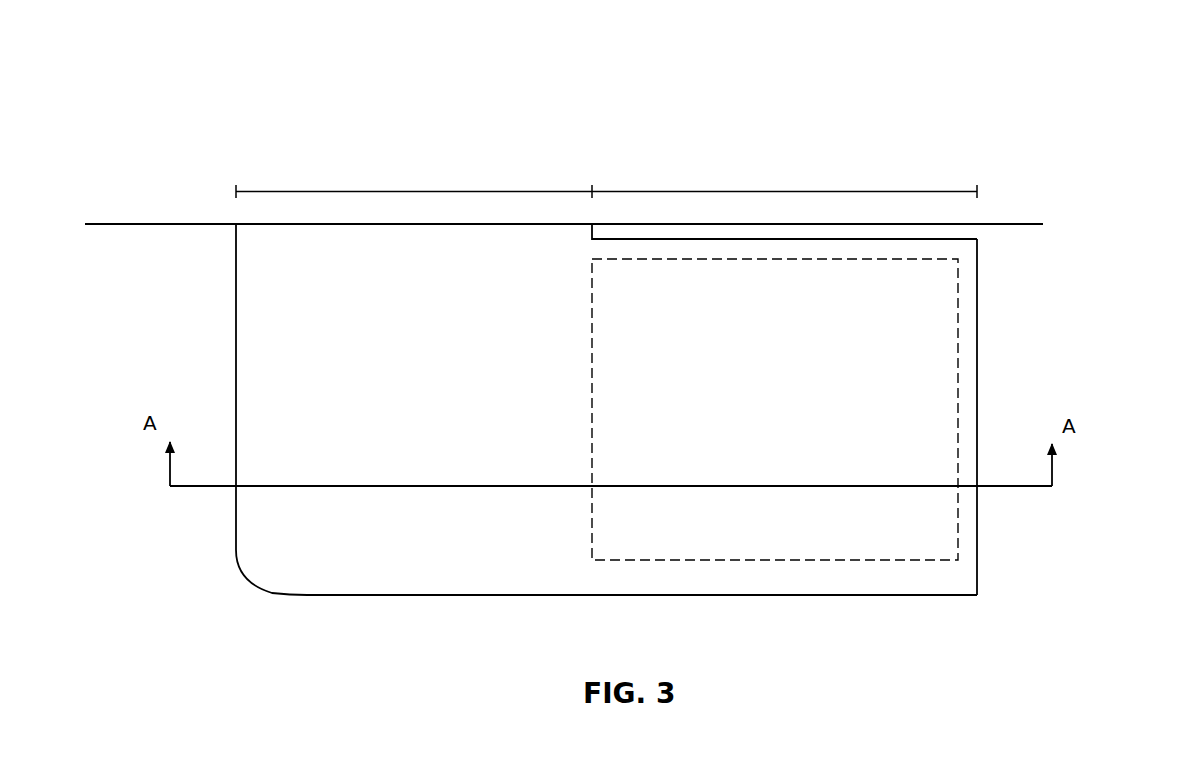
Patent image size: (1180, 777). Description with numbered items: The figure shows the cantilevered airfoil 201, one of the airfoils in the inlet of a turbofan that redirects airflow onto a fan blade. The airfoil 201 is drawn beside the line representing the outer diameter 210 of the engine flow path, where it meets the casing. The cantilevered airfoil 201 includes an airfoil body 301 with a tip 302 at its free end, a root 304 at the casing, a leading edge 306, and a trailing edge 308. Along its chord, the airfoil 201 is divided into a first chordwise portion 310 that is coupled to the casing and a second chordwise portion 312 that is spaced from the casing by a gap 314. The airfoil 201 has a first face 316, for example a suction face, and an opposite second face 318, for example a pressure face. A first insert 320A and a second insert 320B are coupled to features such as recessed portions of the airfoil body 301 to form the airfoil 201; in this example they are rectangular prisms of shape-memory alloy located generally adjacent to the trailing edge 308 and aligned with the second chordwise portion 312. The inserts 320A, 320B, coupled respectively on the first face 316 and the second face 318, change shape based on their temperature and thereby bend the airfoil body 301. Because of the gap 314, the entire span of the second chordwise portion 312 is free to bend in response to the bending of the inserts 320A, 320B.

The cantilevered airfoil 201 is at (1036, 70).
The outer diameter 210 is at (190, 223).
The airfoil body 301 is at (783, 595).
The tip 302 is at (373, 595).
The root 304 is at (385, 224).
The leading edge 306 is at (236, 367).
The trailing edge 308 is at (977, 373).
The first chordwise portion 310 is at (310, 191).
The second chordwise portion 312 is at (657, 191).
The gap 314 is at (986, 230).
The first face 316 is at (433, 410).
The second face 318 is at (226, 515).
The first insert 320A is at (860, 409).
The second insert 320B is at (958, 323).